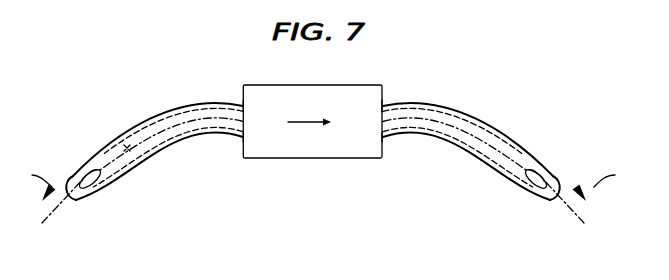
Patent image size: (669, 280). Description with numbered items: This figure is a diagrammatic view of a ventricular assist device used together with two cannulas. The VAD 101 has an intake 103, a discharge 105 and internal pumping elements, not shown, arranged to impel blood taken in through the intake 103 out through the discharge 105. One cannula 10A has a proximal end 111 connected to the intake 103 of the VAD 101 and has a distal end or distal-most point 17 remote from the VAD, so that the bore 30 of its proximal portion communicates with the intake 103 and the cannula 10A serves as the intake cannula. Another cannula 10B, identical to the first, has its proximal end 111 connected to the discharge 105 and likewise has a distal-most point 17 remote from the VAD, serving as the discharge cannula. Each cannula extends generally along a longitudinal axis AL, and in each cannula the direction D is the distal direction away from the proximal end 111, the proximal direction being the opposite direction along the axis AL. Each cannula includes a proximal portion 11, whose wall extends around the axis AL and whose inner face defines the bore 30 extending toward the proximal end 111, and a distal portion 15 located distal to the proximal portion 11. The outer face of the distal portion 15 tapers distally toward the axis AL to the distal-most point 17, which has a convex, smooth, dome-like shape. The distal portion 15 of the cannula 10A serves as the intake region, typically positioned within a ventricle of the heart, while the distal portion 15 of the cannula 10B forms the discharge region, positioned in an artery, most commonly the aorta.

The intake cannula 10A is at (134, 107).
The discharge cannula 10B is at (483, 98).
The proximal portion 11 is at (153, 151).
The distal portion 15 is at (75, 172).
The distal-most point 17 is at (69, 201).
The bore 30 is at (160, 118).
The VAD 101 is at (363, 72).
The intake 103 is at (226, 95).
The discharge 105 is at (383, 103).
The proximal end 111 is at (242, 137).
The distal direction D is at (323, 182).
The longitudinal axis AL is at (50, 218).